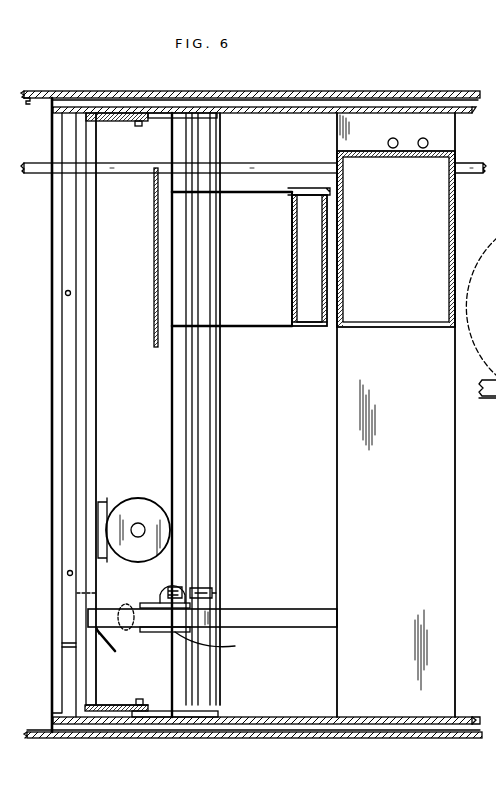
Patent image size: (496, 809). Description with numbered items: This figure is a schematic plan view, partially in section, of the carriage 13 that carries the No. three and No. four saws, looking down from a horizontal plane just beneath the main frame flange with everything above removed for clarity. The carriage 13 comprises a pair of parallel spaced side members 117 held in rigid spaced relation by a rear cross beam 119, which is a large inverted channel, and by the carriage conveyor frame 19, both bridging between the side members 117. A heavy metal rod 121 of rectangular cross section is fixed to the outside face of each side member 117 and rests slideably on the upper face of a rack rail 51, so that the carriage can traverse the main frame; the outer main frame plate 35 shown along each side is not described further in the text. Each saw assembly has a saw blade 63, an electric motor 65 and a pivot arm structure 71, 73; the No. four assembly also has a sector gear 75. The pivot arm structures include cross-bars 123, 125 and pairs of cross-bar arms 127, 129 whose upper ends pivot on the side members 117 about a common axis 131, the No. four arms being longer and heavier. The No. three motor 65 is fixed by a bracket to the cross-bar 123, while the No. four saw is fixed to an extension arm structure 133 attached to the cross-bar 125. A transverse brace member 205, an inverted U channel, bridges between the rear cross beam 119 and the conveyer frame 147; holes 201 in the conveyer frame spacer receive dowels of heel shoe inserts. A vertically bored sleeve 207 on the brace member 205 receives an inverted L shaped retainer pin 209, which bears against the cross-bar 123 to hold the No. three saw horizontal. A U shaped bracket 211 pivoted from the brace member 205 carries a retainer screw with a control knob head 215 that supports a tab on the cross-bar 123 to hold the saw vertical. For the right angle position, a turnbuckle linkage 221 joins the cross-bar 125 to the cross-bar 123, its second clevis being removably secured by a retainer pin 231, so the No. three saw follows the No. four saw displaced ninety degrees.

The carriage 13 is at (455, 537).
The carriage conveyor frame 19 is at (52, 423).
The outer plate 35 is at (330, 91).
The rack rails 51 is at (468, 717).
The saw blade 63 is at (154, 281).
The electric motor 65 is at (139, 498).
The pivot arm structure 71 is at (131, 697).
The pivot arm structure 73 is at (219, 688).
The sector gear 75 is at (321, 190).
The side members 117 is at (284, 113).
The rear cross beam 119 is at (337, 477).
The metal rod 121 is at (237, 92).
The cross-bar 123 is at (97, 415).
The cross-bar 125 is at (215, 441).
The cross-bar arms 127 is at (101, 121).
The cross-bar arms 129 is at (152, 118).
The common axis 131 is at (138, 127).
The extension arm structure 133 is at (308, 328).
The conveyer frame 147 is at (52, 364).
The holes 201 is at (72, 293).
The transverse brace member 205 is at (291, 607).
The sleeve 207 is at (102, 632).
The retainer pin 209 is at (99, 635).
The U shaped bracket 211 is at (198, 643).
The control knob head 215 is at (126, 605).
The linkage 221 is at (198, 588).
The retainer pin 231 is at (147, 596).